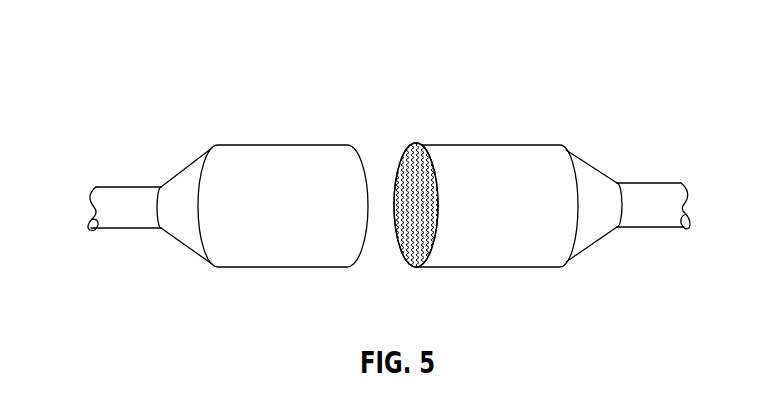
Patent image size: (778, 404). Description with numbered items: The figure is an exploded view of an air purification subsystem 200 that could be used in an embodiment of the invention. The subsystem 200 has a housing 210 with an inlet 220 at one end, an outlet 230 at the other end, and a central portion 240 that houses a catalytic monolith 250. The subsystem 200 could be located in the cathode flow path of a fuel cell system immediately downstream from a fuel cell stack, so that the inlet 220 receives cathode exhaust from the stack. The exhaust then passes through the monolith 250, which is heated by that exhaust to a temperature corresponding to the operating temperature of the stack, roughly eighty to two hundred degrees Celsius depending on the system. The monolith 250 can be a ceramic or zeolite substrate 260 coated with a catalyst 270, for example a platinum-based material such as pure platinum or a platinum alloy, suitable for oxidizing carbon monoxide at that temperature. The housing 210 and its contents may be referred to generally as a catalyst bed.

The air purification subsystem 200 is at (495, 88).
The housing 210 is at (490, 267).
The inlet 220 is at (642, 183).
The outlet 230 is at (137, 228).
The central portion 240 is at (288, 135).
The catalytic monolith 250 is at (397, 252).
The substrate 260 is at (398, 165).
The catalyst 270 is at (436, 167).